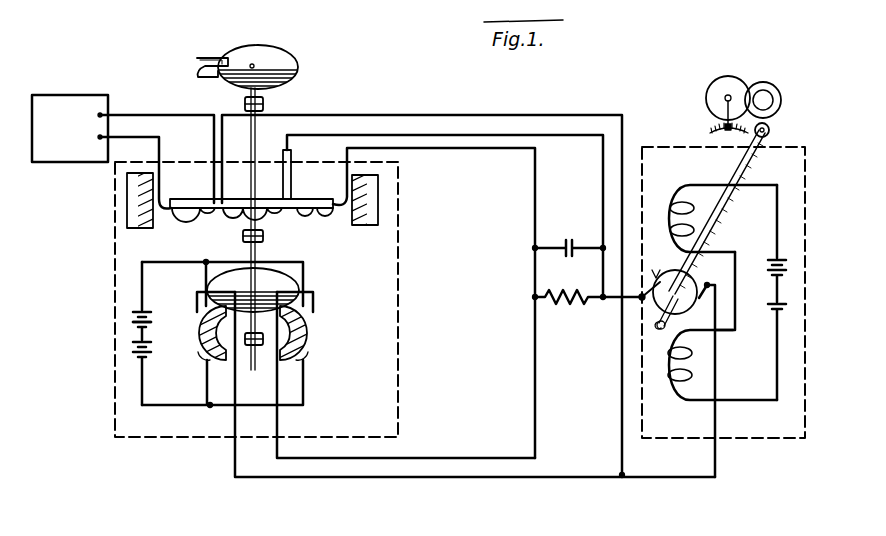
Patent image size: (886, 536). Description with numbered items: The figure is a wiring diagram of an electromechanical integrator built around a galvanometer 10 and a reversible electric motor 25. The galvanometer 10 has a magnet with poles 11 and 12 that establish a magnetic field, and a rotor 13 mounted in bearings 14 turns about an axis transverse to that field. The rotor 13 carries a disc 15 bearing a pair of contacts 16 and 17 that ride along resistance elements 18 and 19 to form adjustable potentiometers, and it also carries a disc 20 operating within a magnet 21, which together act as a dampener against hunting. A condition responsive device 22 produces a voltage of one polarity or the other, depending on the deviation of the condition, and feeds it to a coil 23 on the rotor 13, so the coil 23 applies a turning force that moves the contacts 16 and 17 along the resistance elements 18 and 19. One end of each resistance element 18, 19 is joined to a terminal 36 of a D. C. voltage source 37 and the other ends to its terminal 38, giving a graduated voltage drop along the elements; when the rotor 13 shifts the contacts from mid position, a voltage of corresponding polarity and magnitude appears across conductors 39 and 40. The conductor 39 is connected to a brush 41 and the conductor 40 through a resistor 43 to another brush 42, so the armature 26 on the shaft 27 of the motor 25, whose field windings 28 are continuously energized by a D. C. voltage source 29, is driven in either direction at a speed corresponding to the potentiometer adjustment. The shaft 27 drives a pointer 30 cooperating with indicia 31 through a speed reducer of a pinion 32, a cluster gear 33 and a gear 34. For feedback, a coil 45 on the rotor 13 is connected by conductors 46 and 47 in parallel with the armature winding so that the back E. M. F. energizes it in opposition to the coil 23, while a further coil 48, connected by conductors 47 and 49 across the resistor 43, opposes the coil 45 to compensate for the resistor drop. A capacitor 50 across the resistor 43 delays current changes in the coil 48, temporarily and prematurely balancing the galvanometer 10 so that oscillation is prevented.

The galvanometer 10 is at (406, 247).
The magnet pole 11 is at (139, 231).
The magnet pole 12 is at (362, 228).
The rotor 13 is at (262, 260).
The bearings 14 is at (266, 105).
The disc 15 is at (292, 282).
The contact 16 is at (196, 332).
The contact 17 is at (320, 332).
The resistance element 18 is at (200, 356).
The resistance element 19 is at (318, 352).
The disc 20 is at (286, 60).
The magnet 21 is at (200, 60).
The condition responsive device 22 is at (68, 104).
The coil 23 is at (197, 188).
The reversible electric motor 25 is at (652, 128).
The armature 26 is at (688, 282).
The shaft 27 is at (723, 213).
The field windings 28 is at (684, 207).
The D. C. voltage source 29 is at (773, 305).
The pointer 30 is at (715, 110).
The indicia 31 is at (708, 127).
The pinion 32 is at (770, 129).
The cluster gear 33 is at (771, 80).
The gear 34 is at (724, 76).
The terminal 36 is at (146, 312).
The D. C. voltage source 37 is at (134, 320).
The terminal 38 is at (134, 350).
The conductor 39 is at (388, 480).
The conductor 40 is at (397, 456).
The brush 41 is at (703, 322).
The brush 42 is at (654, 272).
The resistor 43 is at (566, 306).
The coil 45 is at (244, 197).
The conductor 46 is at (405, 114).
The conductor 47 is at (441, 134).
The coil 48 is at (311, 197).
The conductor 49 is at (447, 150).
The capacitor 50 is at (571, 244).